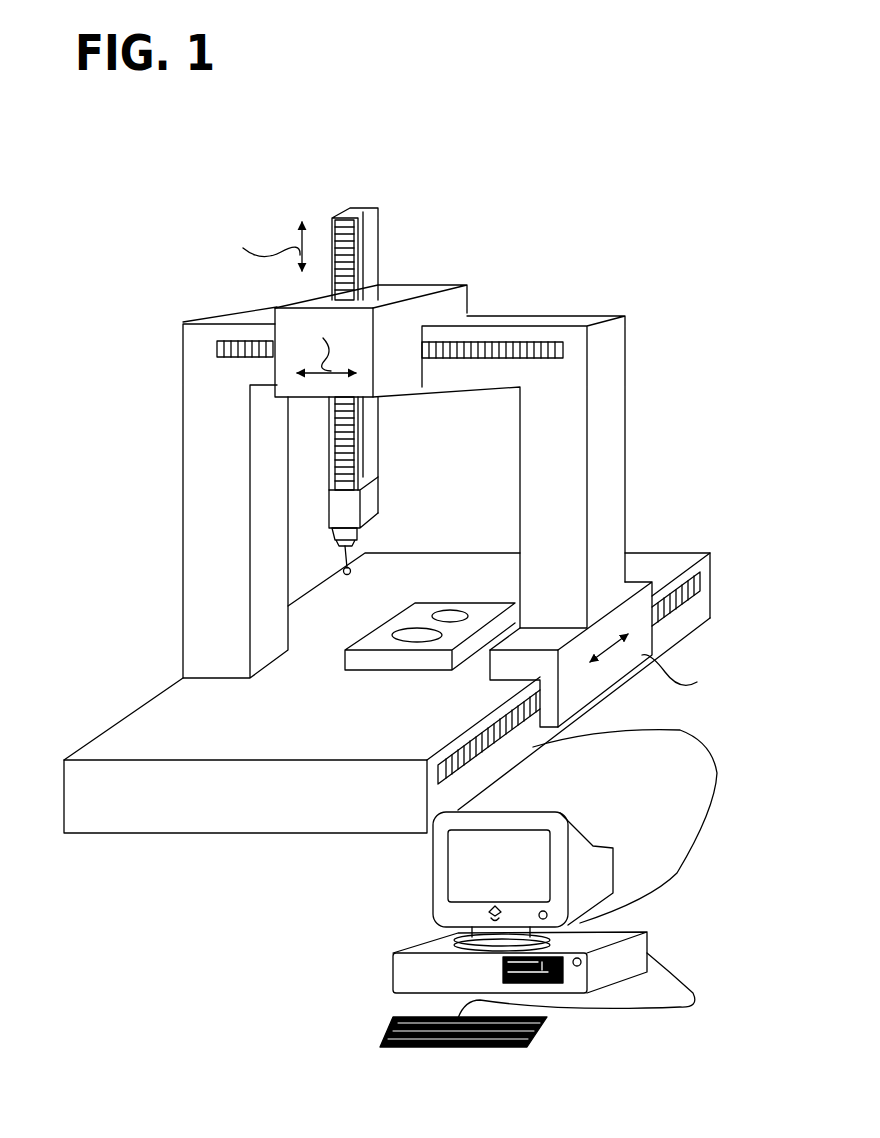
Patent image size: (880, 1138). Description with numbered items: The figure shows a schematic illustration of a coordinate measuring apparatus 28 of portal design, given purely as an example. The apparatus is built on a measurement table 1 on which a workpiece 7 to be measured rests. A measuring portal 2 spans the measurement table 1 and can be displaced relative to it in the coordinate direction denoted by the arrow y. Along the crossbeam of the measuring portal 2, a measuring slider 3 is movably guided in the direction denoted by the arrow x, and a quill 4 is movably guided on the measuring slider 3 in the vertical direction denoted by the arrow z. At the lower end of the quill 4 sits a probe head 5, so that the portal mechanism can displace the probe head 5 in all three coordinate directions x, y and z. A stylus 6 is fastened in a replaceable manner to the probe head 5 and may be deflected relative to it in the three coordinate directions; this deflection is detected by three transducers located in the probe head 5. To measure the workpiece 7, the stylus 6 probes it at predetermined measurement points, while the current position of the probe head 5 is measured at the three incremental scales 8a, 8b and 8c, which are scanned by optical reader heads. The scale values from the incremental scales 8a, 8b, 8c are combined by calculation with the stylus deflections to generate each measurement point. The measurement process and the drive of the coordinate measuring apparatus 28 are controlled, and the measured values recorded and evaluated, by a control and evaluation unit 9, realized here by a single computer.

The measurement table 1 is at (650, 561).
The measuring portal 2 is at (623, 447).
The measuring slider 3 is at (419, 293).
The quill 4 is at (370, 224).
The probe head 5 is at (371, 496).
The stylus 6 is at (362, 558).
The workpiece 7 is at (413, 658).
The incremental scale 8a is at (526, 331).
The incremental scale 8b is at (708, 575).
The incremental scale 8c is at (363, 450).
The control and evaluation unit 9 is at (394, 921).
The coordinate measuring apparatus 28 is at (647, 296).